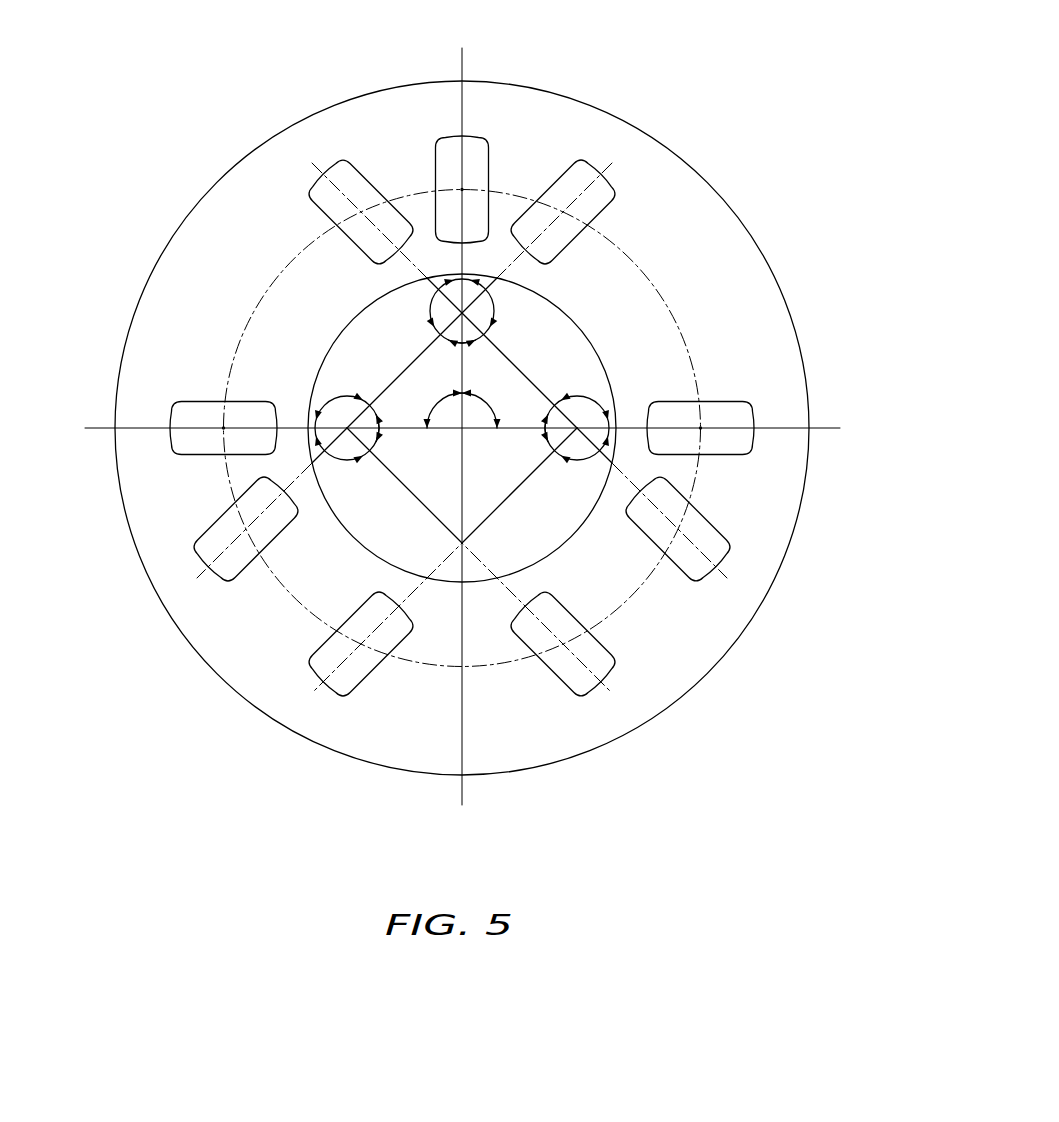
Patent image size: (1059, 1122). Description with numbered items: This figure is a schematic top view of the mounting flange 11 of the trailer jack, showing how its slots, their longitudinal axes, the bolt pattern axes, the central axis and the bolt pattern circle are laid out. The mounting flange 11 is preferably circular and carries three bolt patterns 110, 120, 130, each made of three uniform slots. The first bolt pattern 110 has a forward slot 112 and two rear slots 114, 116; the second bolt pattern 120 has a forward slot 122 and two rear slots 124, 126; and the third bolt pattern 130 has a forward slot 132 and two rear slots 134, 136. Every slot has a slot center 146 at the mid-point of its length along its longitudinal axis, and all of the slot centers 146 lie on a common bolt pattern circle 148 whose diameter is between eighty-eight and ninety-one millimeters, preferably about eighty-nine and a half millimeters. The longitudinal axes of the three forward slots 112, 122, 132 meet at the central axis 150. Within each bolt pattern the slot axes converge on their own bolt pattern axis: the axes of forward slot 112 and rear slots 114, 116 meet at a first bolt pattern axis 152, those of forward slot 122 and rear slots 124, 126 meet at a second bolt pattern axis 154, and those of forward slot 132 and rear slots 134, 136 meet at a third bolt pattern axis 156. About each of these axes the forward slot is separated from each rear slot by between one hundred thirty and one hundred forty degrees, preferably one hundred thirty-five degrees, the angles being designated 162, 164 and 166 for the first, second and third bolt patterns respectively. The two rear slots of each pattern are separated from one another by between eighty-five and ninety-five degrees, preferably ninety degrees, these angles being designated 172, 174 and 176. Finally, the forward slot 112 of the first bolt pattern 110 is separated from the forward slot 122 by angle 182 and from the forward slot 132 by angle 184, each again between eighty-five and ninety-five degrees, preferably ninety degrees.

The mounting flange 11 is at (120, 78).
The first bolt pattern 110 is at (460, 293).
The forward slot 112 is at (478, 150).
The rear slot 114 is at (219, 549).
The rear slot 116 is at (707, 530).
The second bolt pattern 120 is at (375, 405).
The forward slot 122 is at (197, 404).
The rear slot 124 is at (578, 685).
The rear slot 126 is at (583, 175).
The third bolt pattern 130 is at (528, 375).
The forward slot 132 is at (748, 417).
The rear slot 134 is at (362, 193).
The rear slot 136 is at (327, 660).
The slot center 146 is at (463, 186).
The bolt pattern circle 148 is at (270, 280).
The central axis 150 is at (460, 430).
The first bolt pattern axis 152 is at (494, 308).
The second bolt pattern axis 154 is at (345, 425).
The third bolt pattern axis 156 is at (577, 461).
The angle 162 is at (495, 318).
The angle 164 is at (363, 400).
The angle 166 is at (593, 400).
The angle 172 is at (476, 344).
The angle 174 is at (378, 441).
The angle 176 is at (548, 442).
The angle 182 is at (428, 424).
The angle 184 is at (500, 424).